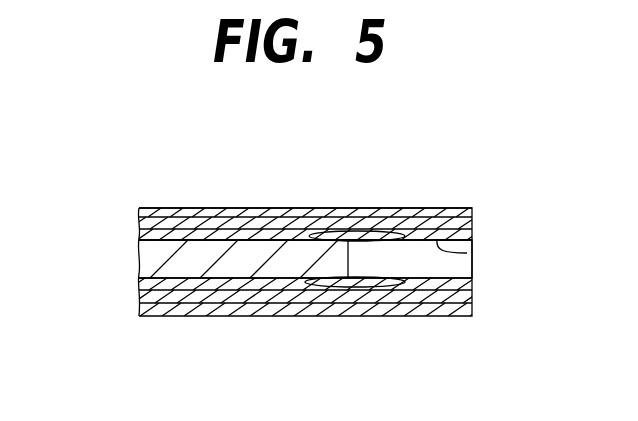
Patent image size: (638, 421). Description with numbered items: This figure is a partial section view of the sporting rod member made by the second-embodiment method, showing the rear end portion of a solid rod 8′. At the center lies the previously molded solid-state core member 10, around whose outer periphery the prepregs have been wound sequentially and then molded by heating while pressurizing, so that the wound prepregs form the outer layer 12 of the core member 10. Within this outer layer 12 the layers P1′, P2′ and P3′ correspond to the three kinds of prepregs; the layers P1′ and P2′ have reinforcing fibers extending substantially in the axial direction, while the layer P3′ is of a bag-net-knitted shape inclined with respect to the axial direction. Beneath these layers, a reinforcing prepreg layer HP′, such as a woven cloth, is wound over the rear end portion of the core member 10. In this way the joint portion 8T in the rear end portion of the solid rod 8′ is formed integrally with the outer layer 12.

The outer layer 12 is at (297, 133).
The layer P1′ is at (176, 236).
The layer P2′ is at (228, 224).
The layer P3′ is at (272, 213).
The reinforcing prepreg layer HP′ is at (350, 236).
The solid rod 8′ is at (418, 206).
The joint portion 8T is at (472, 250).
The core member 10 is at (147, 262).